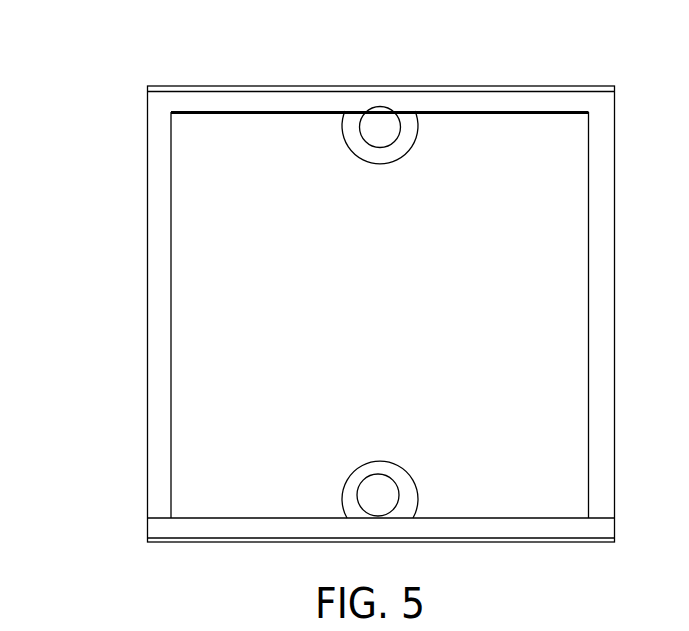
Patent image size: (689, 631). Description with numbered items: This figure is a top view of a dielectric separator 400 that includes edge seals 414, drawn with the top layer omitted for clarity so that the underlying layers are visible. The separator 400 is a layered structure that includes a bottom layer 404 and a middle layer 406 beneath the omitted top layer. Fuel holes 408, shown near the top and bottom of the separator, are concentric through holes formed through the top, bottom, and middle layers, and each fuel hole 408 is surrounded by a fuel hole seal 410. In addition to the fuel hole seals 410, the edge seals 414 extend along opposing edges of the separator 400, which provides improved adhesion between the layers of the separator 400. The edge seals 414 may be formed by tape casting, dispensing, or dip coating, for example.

The separator 400 is at (113, 90).
The bottom layer 404 is at (147, 318).
The middle layer 406 is at (240, 373).
The fuel holes 408 is at (373, 116).
The seals 410 is at (402, 130).
The edge seals 414 is at (477, 91).